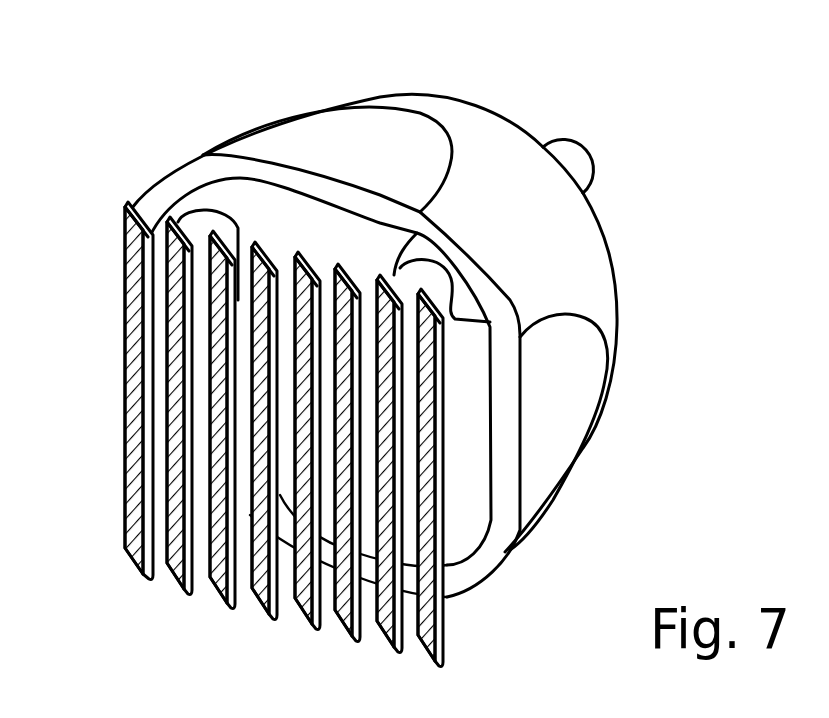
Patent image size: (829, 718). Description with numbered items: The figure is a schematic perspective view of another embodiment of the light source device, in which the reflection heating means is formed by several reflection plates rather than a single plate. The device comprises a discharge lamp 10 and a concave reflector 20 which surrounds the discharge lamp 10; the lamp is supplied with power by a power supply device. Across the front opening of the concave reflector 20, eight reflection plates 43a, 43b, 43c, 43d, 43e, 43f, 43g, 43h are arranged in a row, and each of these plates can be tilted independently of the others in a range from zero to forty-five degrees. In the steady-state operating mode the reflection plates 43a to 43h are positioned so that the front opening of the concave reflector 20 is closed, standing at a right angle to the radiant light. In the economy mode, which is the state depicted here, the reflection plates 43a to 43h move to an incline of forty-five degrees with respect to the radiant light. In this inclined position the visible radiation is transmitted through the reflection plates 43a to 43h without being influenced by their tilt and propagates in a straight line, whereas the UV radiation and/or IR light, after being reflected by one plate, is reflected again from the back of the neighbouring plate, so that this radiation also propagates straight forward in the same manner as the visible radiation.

The discharge lamp 10 is at (568, 122).
The concave reflector 20 is at (368, 97).
The reflection plate 43a is at (126, 560).
The reflection plate 43b is at (168, 586).
The reflection plate 43c is at (213, 594).
The reflection plate 43d is at (263, 608).
The reflection plate 43e is at (305, 622).
The reflection plate 43f is at (350, 633).
The reflection plate 43g is at (392, 647).
The reflection plate 43h is at (447, 653).